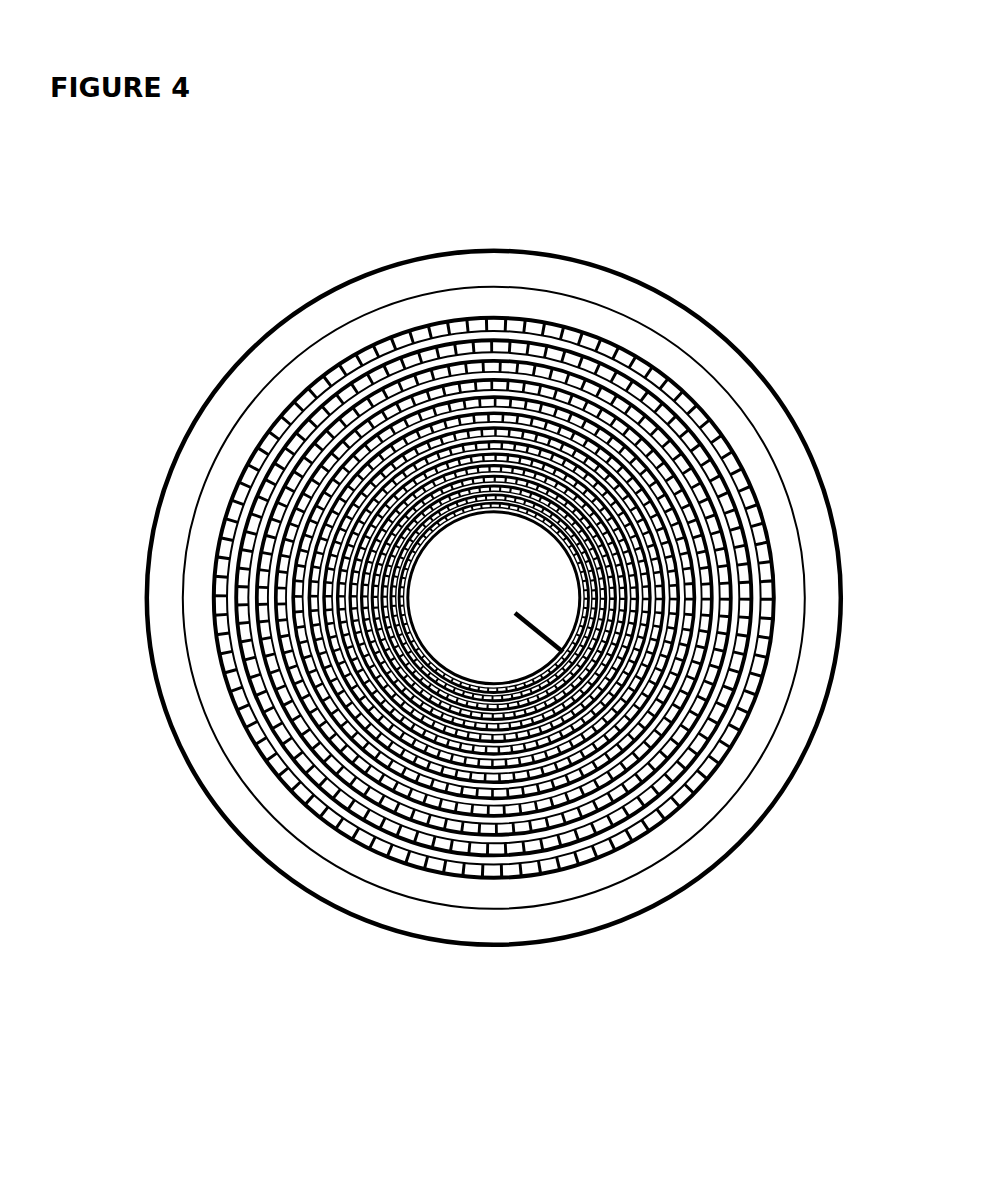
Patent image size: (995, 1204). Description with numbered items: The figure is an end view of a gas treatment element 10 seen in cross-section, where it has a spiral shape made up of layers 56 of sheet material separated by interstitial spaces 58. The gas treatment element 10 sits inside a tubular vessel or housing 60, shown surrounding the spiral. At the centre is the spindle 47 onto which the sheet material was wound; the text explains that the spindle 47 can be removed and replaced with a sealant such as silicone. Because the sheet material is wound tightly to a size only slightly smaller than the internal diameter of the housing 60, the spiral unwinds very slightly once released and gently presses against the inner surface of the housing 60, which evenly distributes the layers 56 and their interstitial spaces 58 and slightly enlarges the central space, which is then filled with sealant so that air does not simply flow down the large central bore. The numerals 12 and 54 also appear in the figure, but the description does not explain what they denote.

The gas treatment element 10 is at (453, 368).
The apparatus 12 is at (604, 1046).
The spindle 47 is at (481, 627).
The support bar 54 is at (537, 627).
The layers 56 is at (645, 775).
The interstitial spaces 58 is at (347, 790).
The tubular vessel or housing 60 is at (585, 300).